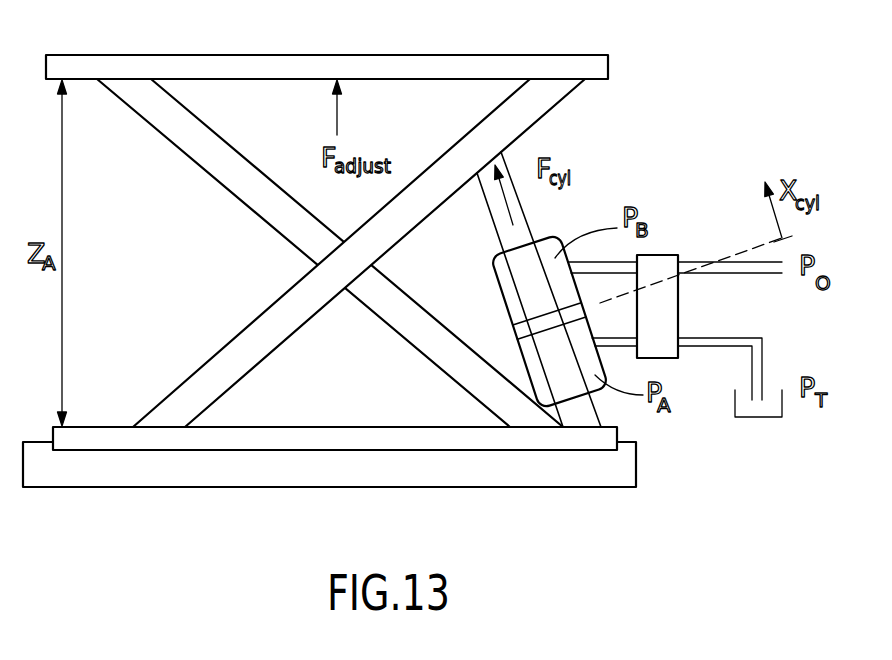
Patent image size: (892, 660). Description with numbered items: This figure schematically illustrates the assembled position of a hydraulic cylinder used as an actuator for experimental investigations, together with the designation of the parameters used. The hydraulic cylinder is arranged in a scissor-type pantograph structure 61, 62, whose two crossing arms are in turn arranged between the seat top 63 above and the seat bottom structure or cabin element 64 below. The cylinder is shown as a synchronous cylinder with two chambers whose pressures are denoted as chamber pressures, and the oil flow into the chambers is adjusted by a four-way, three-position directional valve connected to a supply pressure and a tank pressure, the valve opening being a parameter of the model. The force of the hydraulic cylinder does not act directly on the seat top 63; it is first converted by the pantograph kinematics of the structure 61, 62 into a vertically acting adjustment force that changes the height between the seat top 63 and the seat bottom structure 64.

The pantograph structure 61 is at (185, 157).
The pantograph structure 62 is at (315, 315).
The seat top 63 is at (442, 55).
The seat bottom structure or cabin element 64 is at (455, 450).